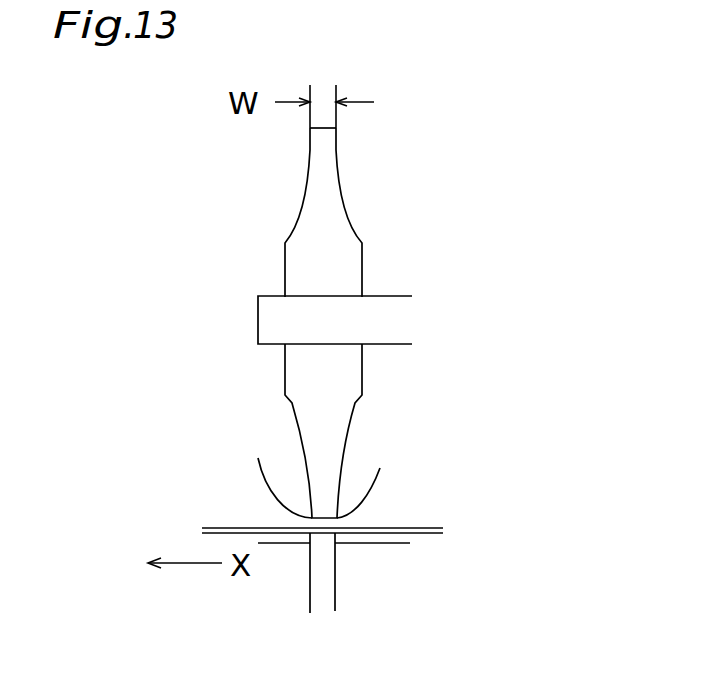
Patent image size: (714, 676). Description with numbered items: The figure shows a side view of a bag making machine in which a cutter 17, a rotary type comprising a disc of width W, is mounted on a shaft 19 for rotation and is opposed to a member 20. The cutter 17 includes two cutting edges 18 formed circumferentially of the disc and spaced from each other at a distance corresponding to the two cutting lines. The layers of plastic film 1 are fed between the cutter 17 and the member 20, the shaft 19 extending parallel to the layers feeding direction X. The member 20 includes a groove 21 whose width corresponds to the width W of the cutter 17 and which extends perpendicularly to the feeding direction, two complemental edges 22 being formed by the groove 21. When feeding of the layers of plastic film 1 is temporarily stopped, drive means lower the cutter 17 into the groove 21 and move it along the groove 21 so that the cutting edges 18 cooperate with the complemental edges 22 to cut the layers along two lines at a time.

The layers of plastic film 1 is at (212, 528).
The cutter 17 is at (332, 227).
The cutting edges 18 is at (327, 461).
The shaft 19 is at (378, 312).
The member 20 is at (367, 567).
The groove 21 is at (313, 597).
The complemental edges 22 is at (305, 543).